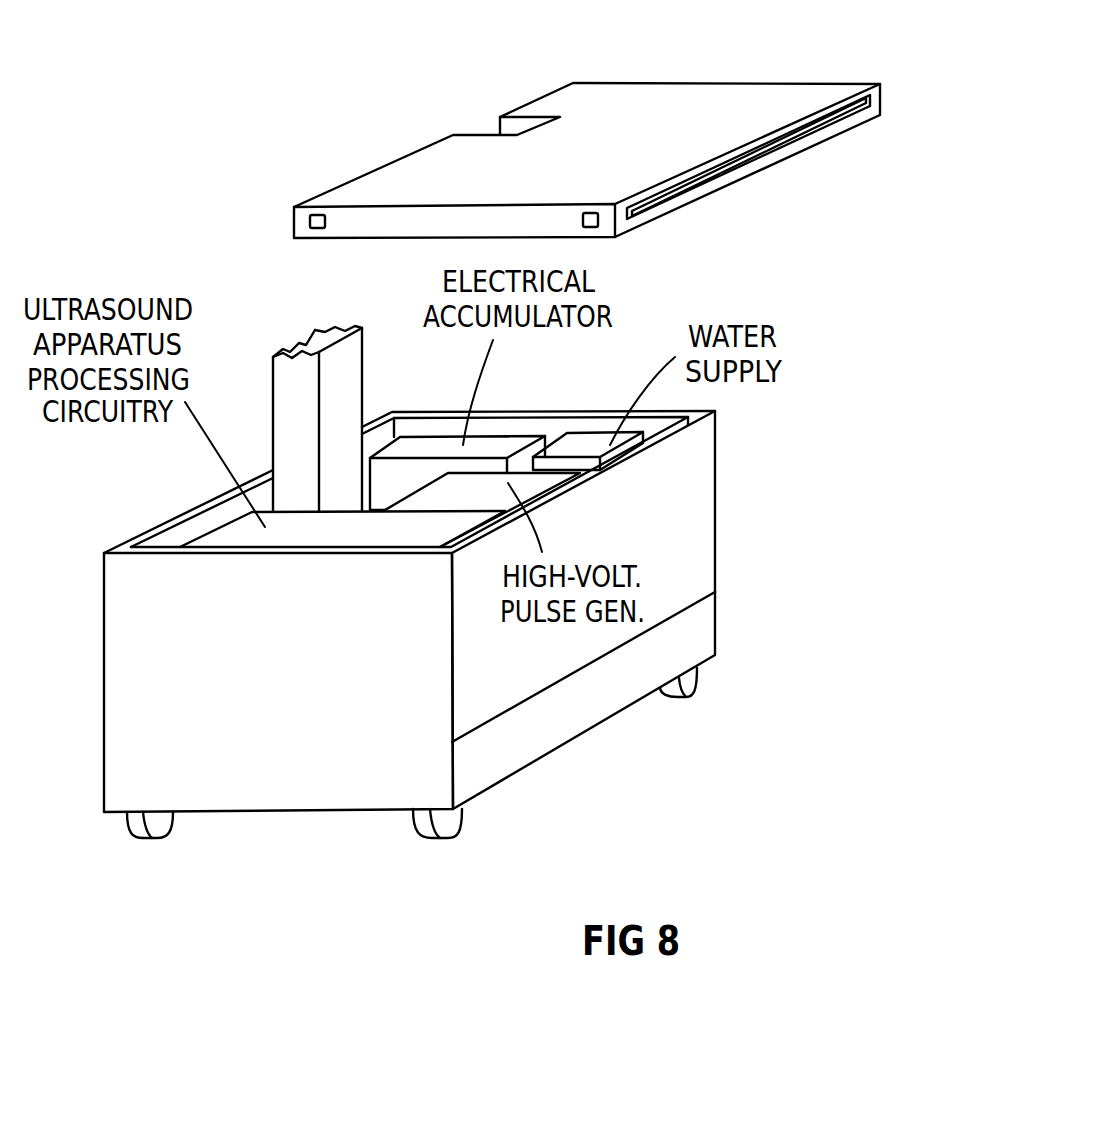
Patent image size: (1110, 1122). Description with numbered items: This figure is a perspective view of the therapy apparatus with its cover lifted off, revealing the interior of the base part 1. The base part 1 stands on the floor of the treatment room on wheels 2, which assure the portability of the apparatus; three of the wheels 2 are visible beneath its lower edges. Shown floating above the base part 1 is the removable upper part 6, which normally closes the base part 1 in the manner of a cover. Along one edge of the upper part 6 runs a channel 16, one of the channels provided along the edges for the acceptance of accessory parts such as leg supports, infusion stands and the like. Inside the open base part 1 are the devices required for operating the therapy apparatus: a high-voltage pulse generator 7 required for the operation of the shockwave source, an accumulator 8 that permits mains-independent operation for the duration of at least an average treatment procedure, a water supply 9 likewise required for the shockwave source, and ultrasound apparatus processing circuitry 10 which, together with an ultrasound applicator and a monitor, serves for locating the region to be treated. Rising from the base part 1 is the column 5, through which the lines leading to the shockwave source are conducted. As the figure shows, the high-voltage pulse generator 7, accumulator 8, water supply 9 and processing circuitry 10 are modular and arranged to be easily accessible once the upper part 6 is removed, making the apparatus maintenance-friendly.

The base part 1 is at (537, 708).
The wheels 2 is at (162, 825).
The column 5 is at (297, 415).
The upper part 6 is at (687, 100).
The high-voltage pulse generator 7 is at (482, 490).
The accumulator 8 is at (427, 447).
The water supply 9 is at (593, 445).
The ultrasound apparatus processing circuitry 10 is at (229, 535).
The channel 16 is at (727, 165).